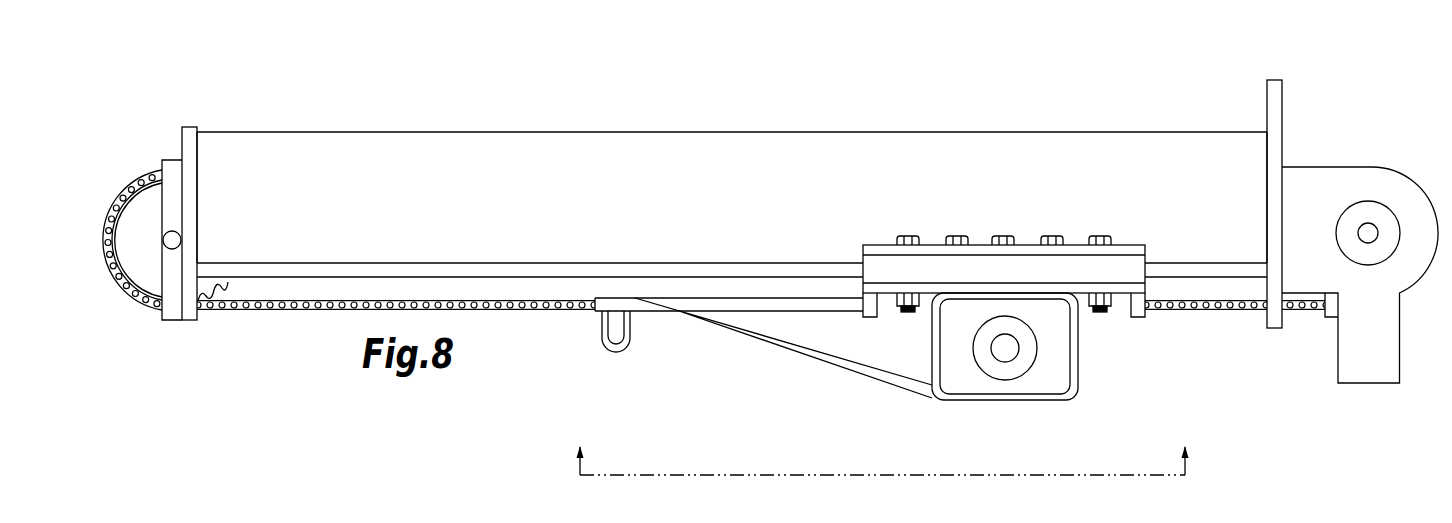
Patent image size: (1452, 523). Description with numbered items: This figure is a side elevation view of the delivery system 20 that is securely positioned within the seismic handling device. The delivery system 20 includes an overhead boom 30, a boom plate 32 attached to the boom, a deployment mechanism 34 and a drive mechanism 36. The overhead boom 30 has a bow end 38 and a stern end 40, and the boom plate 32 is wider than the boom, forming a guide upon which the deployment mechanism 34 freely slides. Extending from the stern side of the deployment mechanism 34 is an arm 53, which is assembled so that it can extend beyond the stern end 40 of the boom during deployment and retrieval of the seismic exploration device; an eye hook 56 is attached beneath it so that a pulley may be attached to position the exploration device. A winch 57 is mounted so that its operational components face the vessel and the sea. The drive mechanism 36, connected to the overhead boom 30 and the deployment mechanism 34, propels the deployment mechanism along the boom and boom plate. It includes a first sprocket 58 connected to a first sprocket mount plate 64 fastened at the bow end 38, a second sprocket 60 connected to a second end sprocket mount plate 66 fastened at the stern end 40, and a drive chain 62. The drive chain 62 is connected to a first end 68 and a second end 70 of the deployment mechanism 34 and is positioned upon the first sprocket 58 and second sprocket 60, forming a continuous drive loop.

The delivery system 20 is at (213, 357).
The overhead boom 30 is at (758, 115).
The boom plate 32 is at (313, 270).
The deployment mechanism 34 is at (983, 240).
The drive mechanism 36 is at (125, 172).
The bow end 38 is at (202, 132).
The stern end 40 is at (1265, 130).
The arm 53 is at (773, 377).
The eye hook 56 is at (613, 350).
The winch 57 is at (1052, 402).
The first sprocket 58 is at (133, 297).
The second sprocket 60 is at (1352, 162).
The drive chain 62 is at (532, 312).
The first sprocket mount plate 64 is at (187, 127).
The second end sprocket mount plate 66 is at (1277, 97).
The first end 68 is at (870, 317).
The second end 70 is at (1137, 317).